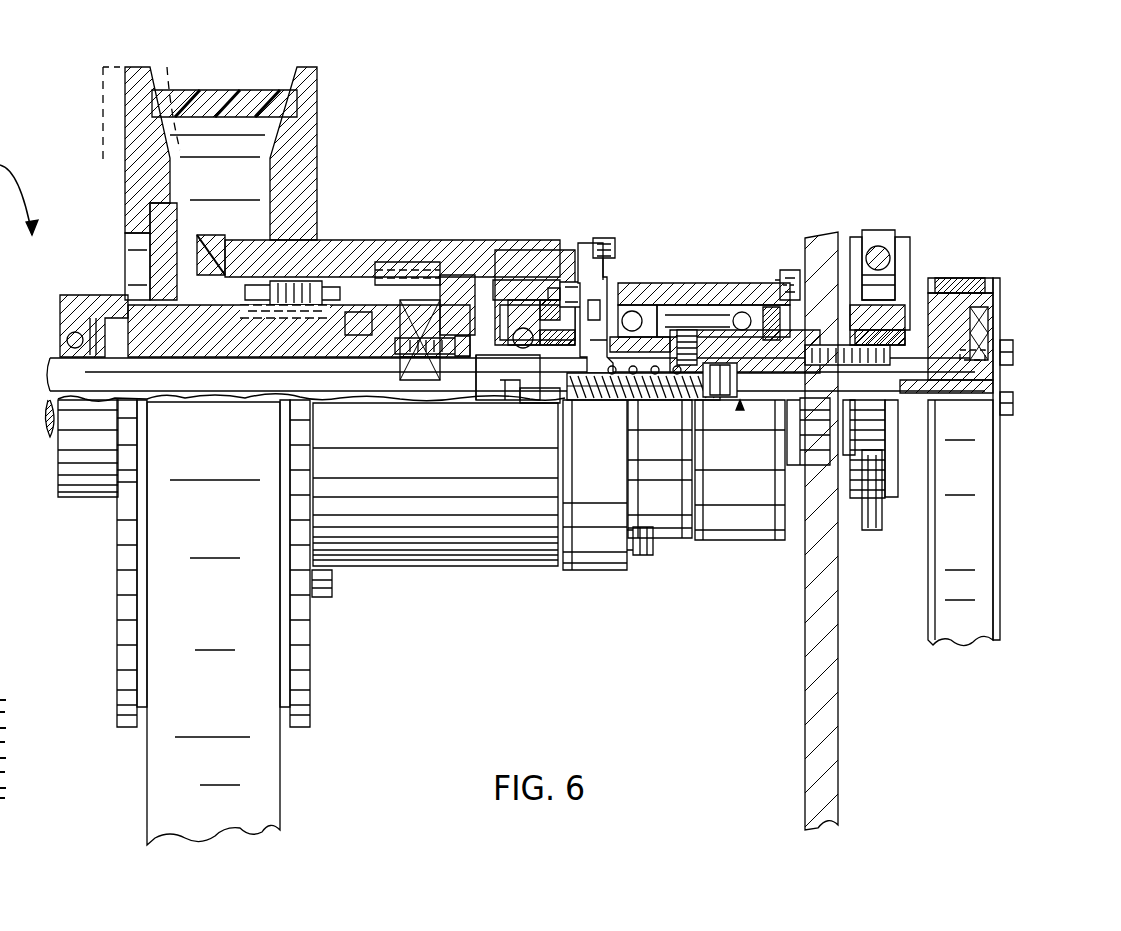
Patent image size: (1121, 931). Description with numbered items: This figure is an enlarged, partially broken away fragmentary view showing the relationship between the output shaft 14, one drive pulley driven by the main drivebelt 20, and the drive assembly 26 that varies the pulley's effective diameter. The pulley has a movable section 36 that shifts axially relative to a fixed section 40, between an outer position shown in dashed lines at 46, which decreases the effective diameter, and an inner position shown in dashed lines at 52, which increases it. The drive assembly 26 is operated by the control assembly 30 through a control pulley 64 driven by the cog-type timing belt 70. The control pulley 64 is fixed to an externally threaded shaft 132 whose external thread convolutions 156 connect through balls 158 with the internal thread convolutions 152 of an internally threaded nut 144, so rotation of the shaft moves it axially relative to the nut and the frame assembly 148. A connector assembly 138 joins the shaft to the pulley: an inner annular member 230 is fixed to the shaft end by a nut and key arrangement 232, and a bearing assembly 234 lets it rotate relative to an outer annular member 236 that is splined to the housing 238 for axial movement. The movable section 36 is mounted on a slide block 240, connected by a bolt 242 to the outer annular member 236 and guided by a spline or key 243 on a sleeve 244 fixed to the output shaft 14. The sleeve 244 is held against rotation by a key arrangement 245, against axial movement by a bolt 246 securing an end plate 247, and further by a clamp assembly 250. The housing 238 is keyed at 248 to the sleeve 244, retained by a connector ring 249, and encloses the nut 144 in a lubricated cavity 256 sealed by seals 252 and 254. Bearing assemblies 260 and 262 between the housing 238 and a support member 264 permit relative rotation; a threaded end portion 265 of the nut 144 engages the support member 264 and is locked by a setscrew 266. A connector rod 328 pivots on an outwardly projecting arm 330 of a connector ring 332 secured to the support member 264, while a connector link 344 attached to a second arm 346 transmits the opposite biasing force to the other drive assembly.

The output shaft 14 is at (62, 380).
The main drivebelt 20 is at (270, 70).
The drive assembly 26 is at (597, 598).
The control assembly 30 is at (1030, 507).
The movable section of drive pulley 36 is at (132, 130).
The fixed section of drive pulley 40 is at (320, 112).
The outer position 46 is at (108, 62).
The inner position 52 is at (167, 67).
The control pulley 64 is at (975, 320).
The timing belt 70 is at (990, 275).
The externally threaded shaft 132 is at (740, 410).
The connector assembly 138 is at (555, 405).
The internally threaded nut 144 is at (660, 345).
The frame assembly 148 is at (822, 235).
The internal thread convolutions 152 is at (668, 395).
The external thread convolutions 156 is at (578, 395).
The balls or bearings 158 is at (593, 358).
The inner annular member 230 is at (490, 395).
The nut and key arrangement 232 is at (535, 403).
The bearing assembly 234 is at (515, 335).
The outer annular member 236 is at (583, 290).
The housing 238 is at (425, 252).
The slide block 240 is at (155, 270).
The bolt 242 is at (392, 290).
The spline or key 243 is at (240, 312).
The sleeve 244 is at (70, 332).
The key arrangement 245 is at (265, 398).
The bolt 246 is at (450, 392).
The end plate 247 is at (450, 310).
The key or spline 248 is at (398, 338).
The connector ring 249 is at (345, 332).
The clamp assembly 250 is at (80, 460).
The seal 252 is at (250, 222).
The seal 254 is at (775, 335).
The cavity 256 is at (590, 290).
The bearing assembly 260 is at (638, 310).
The bearing assembly 262 is at (740, 312).
The support member 264 is at (790, 360).
The threaded end portion 265 is at (735, 398).
The setscrew 266 is at (735, 352).
The connector rod 328 is at (885, 240).
The outwardly projecting arm 330 is at (900, 250).
The connector ring 332 is at (900, 340).
The connector link 344 is at (880, 535).
The second arm 346 is at (890, 428).